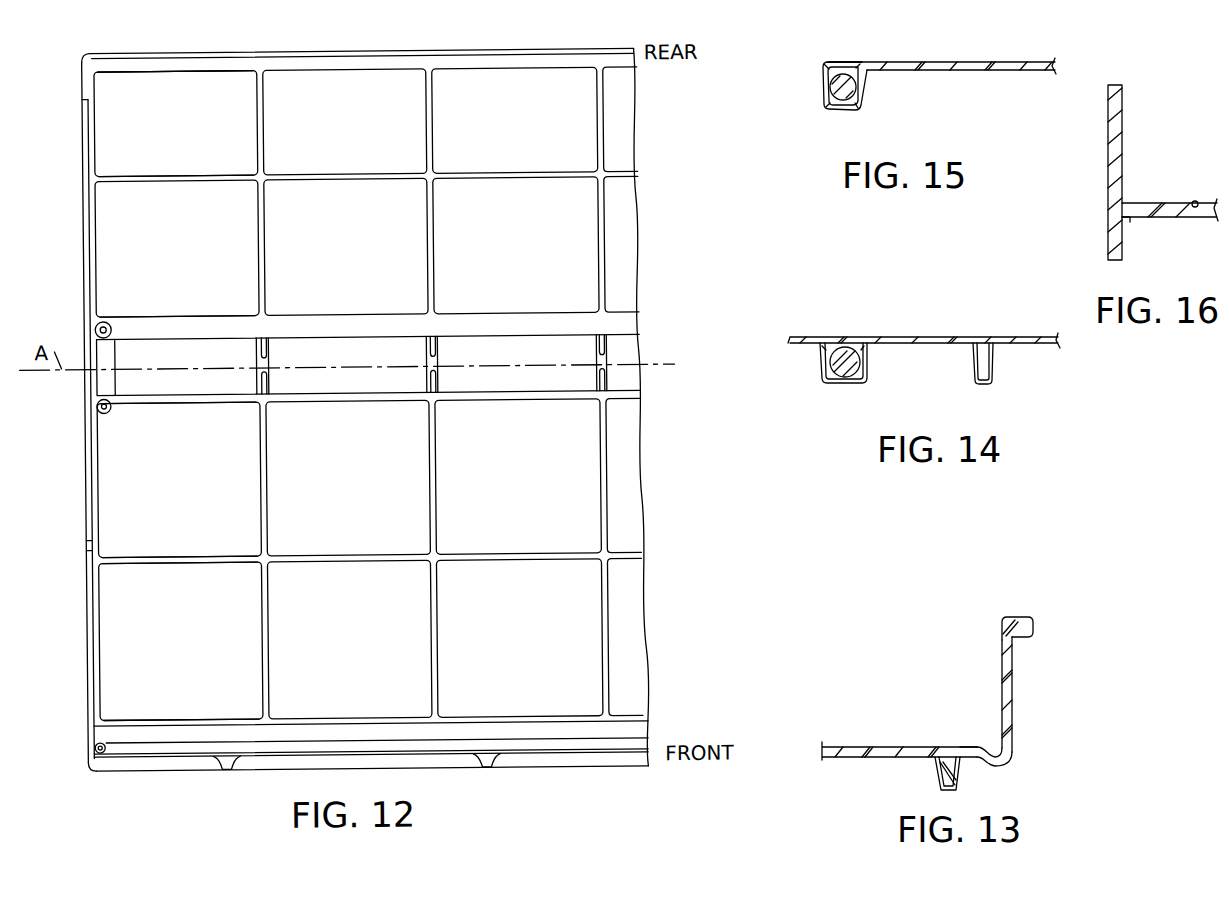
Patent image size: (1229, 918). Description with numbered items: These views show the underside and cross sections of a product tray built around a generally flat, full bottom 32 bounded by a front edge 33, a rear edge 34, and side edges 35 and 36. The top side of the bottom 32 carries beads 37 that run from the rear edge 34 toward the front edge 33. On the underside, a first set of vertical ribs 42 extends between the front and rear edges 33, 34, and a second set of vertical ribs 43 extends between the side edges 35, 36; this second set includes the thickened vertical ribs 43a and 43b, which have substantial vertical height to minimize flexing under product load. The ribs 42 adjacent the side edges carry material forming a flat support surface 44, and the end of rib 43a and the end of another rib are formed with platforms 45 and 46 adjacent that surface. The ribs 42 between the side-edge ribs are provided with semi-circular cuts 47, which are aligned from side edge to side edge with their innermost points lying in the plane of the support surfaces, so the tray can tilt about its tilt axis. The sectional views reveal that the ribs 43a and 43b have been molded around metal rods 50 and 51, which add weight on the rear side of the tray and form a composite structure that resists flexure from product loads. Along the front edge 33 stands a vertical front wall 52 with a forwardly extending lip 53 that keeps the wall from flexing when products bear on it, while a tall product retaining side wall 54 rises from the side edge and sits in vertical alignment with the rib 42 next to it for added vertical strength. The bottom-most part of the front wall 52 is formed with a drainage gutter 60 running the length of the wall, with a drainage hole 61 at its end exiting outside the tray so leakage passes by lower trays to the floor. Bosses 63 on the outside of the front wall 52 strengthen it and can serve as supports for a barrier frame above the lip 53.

In FIG. 12, the bottom 32 is at (351, 482).
In FIG. 15, the bottom 32 is at (985, 62).
In FIG. 16, the bottom 32 is at (1198, 214).
In FIG. 14, the bottom 32 is at (938, 338).
In FIG. 13, the bottom 32 is at (880, 747).
In FIG. 12, the front edge 33 is at (328, 740).
In FIG. 13, the front edge 33 is at (975, 745).
In FIG. 15, the rear edge 34 is at (838, 70).
In FIG. 16, the side edge 35 is at (1115, 208).
In FIG. 12, the side edge 36 is at (84, 483).
In FIG. 16, the beads 37 is at (1152, 205).
In FIG. 12, the first set of vertical ribs 42 is at (267, 231).
In FIG. 16, the first set of vertical ribs 42 is at (1120, 252).
In FIG. 12, the second set of vertical ribs 43 is at (191, 176).
In FIG. 14, the second set of vertical ribs 43 is at (992, 370).
In FIG. 13, the second set of vertical ribs 43 is at (943, 777).
In FIG. 12, the thickened vertical rib 43a is at (204, 322).
In FIG. 14, the thickened vertical rib 43a is at (857, 378).
In FIG. 12, the thickened vertical rib 43b is at (198, 63).
In FIG. 15, the thickened vertical rib 43b is at (858, 110).
In FIG. 12, the flat support surface 44 is at (100, 355).
In FIG. 12, the platform 45 is at (111, 321).
In FIG. 12, the platform 46 is at (109, 410).
In FIG. 12, the semi-circular cuts 47 is at (265, 363).
In FIG. 14, the metal rod 50 is at (835, 373).
In FIG. 15, the metal rod 51 is at (828, 91).
In FIG. 12, the front wall 52 is at (572, 751).
In FIG. 13, the front wall 52 is at (1012, 710).
In FIG. 12, the lip 53 is at (150, 765).
In FIG. 13, the lip 53 is at (1033, 625).
In FIG. 12, the side wall 54 is at (90, 646).
In FIG. 16, the side wall 54 is at (1117, 150).
In FIG. 13, the drainage gutter 60 is at (1007, 743).
In FIG. 12, the drainage hole 61 is at (94, 764).
In FIG. 12, the bosses 63 is at (224, 766).